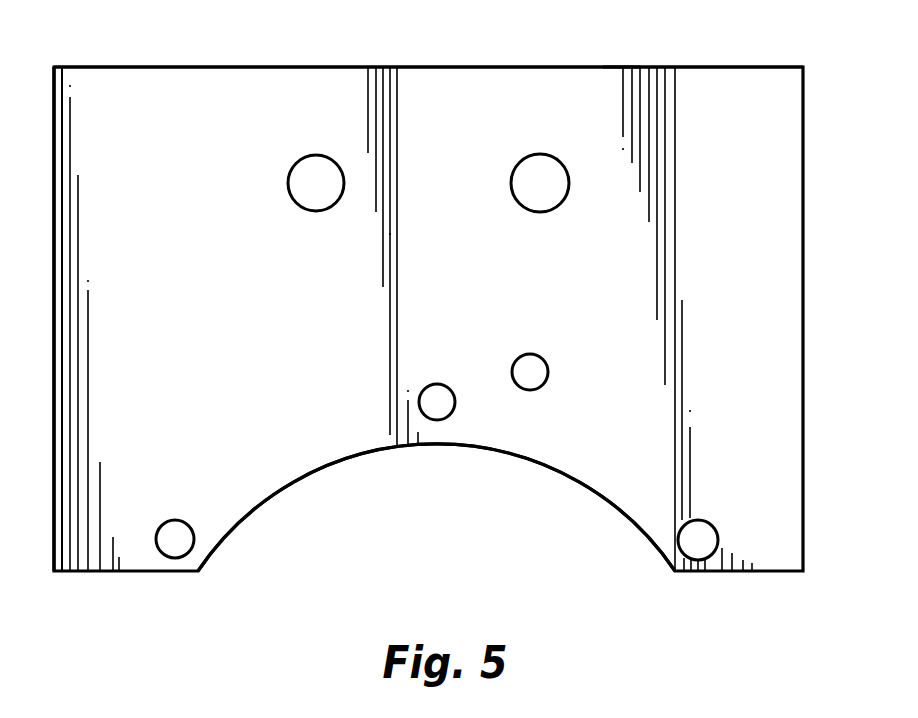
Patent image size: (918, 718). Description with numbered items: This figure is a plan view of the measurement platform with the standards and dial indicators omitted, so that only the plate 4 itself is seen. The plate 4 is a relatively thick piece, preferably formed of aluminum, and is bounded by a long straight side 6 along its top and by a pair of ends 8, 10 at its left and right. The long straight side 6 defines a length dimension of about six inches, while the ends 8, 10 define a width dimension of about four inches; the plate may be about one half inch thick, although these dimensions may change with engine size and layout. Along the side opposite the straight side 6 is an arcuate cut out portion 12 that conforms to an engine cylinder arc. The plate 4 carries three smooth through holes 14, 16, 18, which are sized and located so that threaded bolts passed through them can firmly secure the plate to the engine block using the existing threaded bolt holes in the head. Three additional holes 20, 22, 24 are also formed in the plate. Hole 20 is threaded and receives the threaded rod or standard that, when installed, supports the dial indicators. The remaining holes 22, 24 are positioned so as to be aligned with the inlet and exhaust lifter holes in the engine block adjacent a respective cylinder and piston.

The plate 4 is at (606, 66).
The long straight side 6 is at (288, 66).
The end 8 is at (54, 291).
The end 10 is at (806, 270).
The arcuate cut out portion 12 is at (290, 488).
The smooth through hole 14 is at (170, 521).
The smooth through hole 16 is at (435, 398).
The smooth through hole 18 is at (700, 535).
The threaded hole 20 is at (538, 375).
The hole 22 is at (320, 164).
The hole 24 is at (546, 176).